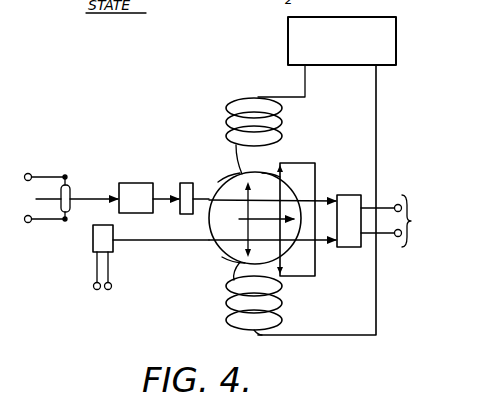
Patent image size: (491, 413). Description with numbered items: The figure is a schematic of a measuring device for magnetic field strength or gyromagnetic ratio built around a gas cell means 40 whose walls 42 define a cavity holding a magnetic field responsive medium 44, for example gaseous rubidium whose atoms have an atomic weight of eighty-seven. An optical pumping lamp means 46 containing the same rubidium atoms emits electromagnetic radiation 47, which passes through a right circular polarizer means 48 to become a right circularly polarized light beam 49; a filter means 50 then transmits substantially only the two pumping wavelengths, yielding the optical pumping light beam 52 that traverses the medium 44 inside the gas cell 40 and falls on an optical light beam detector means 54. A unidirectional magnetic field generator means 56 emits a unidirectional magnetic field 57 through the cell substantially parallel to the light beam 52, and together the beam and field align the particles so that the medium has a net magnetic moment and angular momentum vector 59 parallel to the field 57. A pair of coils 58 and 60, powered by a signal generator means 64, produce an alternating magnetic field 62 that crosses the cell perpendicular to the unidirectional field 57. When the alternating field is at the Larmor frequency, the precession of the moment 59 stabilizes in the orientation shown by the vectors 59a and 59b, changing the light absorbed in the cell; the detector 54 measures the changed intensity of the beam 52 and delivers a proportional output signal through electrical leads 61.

The gas cell means 40 is at (221, 183).
The walls 42 is at (239, 174).
The magnetic field responsive medium 44 is at (267, 182).
The optical pumping lamp means 46 is at (42, 199).
The electromagnetic radiation 47 is at (88, 192).
The right circular polarizer means 48 is at (132, 183).
The right circularly polarized light beam 49 is at (158, 201).
The filter means 50 is at (181, 183).
The optical pumping light beam 52 is at (323, 199).
The optical light beam detector means 54 is at (363, 180).
The unidirectional magnetic field generator means 56 is at (113, 247).
The unidirectional magnetic field 57 is at (322, 243).
The coil 58 is at (283, 304).
The net magnetic moment and angular momentum vector 59 is at (252, 221).
The vector 59a is at (245, 212).
The vector 59b is at (233, 259).
The coil 60 is at (283, 126).
The electrical leads 61 is at (395, 221).
The alternating magnetic field 62 is at (296, 219).
The signal generator means 64 is at (288, 50).